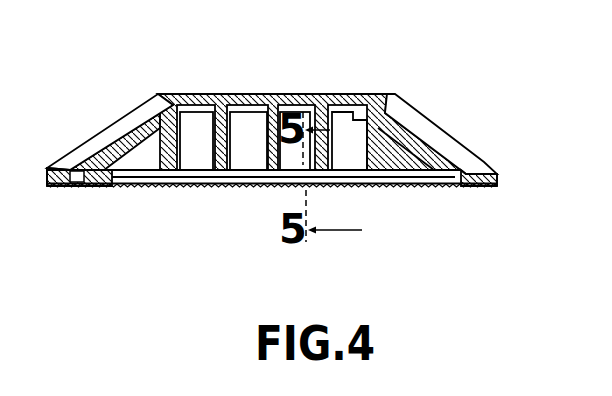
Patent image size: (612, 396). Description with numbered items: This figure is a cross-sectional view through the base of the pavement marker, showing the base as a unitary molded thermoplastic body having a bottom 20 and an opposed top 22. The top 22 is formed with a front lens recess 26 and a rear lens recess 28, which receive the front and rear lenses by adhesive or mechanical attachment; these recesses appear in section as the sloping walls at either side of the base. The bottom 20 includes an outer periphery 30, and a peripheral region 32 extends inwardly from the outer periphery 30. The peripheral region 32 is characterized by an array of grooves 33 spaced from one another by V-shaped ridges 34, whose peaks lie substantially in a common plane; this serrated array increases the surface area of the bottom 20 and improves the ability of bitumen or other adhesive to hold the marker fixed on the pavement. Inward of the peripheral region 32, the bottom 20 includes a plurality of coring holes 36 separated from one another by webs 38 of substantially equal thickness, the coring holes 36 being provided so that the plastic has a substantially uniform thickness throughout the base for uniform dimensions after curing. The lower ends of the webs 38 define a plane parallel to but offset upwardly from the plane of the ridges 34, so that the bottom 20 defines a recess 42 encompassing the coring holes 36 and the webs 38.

The bottom 20 is at (74, 193).
The top 22 is at (273, 90).
The front lens recess 26 is at (130, 122).
The rear lens recess 28 is at (413, 109).
The outer periphery 30 is at (499, 173).
The peripheral region 32 is at (469, 188).
The grooves 33 is at (357, 188).
The V-shaped ridges 34 is at (172, 188).
The coring holes 36 is at (239, 100).
The webs 38 is at (203, 112).
The recess 42 is at (108, 157).